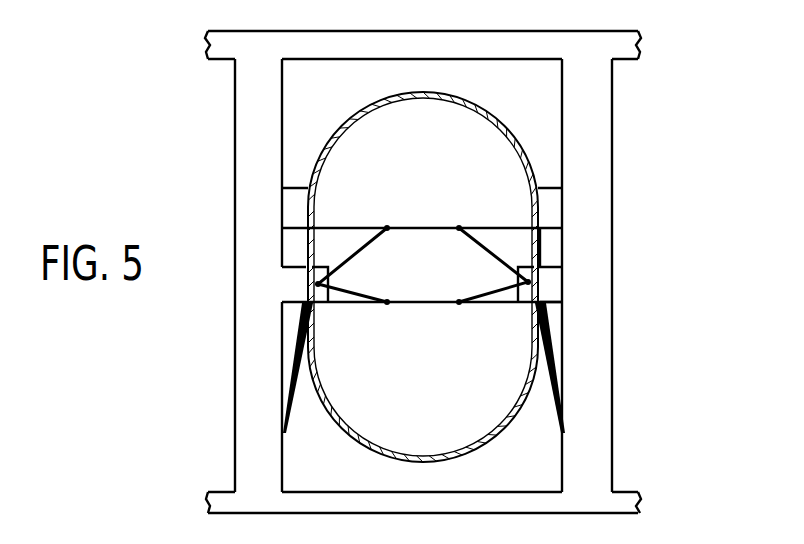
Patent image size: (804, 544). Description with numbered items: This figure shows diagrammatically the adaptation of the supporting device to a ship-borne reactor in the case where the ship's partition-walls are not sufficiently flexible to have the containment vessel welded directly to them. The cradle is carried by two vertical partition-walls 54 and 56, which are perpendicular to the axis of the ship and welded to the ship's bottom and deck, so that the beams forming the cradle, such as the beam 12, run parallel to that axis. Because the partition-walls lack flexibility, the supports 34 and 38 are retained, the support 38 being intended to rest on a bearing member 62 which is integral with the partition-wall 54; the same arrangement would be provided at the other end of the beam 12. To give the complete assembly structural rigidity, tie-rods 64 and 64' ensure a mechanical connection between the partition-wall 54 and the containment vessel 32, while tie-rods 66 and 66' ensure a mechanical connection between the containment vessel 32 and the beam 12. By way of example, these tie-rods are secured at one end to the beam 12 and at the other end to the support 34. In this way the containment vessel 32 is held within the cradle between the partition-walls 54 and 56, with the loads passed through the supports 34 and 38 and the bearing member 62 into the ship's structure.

The beam 12 is at (412, 252).
The containment vessel 32 is at (518, 148).
The support 34 is at (520, 310).
The support 38 is at (550, 258).
The partition-wall 54 is at (590, 108).
The partition-wall 56 is at (256, 143).
The bearing member 62 is at (550, 290).
The tie-rod 64 is at (481, 192).
The tie-rod 64' is at (483, 368).
The tie-rod 66 is at (423, 235).
The tie-rod 66' is at (426, 319).